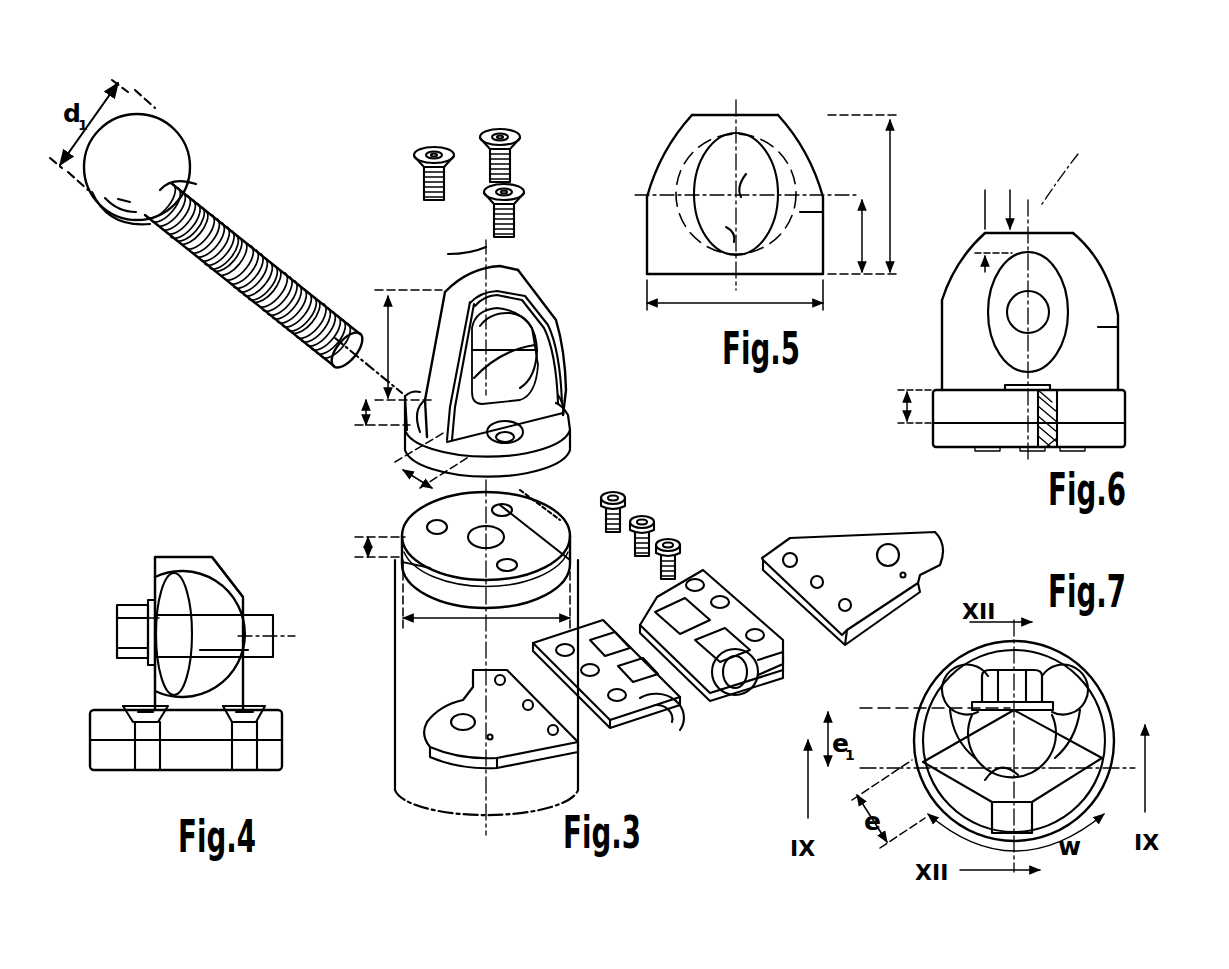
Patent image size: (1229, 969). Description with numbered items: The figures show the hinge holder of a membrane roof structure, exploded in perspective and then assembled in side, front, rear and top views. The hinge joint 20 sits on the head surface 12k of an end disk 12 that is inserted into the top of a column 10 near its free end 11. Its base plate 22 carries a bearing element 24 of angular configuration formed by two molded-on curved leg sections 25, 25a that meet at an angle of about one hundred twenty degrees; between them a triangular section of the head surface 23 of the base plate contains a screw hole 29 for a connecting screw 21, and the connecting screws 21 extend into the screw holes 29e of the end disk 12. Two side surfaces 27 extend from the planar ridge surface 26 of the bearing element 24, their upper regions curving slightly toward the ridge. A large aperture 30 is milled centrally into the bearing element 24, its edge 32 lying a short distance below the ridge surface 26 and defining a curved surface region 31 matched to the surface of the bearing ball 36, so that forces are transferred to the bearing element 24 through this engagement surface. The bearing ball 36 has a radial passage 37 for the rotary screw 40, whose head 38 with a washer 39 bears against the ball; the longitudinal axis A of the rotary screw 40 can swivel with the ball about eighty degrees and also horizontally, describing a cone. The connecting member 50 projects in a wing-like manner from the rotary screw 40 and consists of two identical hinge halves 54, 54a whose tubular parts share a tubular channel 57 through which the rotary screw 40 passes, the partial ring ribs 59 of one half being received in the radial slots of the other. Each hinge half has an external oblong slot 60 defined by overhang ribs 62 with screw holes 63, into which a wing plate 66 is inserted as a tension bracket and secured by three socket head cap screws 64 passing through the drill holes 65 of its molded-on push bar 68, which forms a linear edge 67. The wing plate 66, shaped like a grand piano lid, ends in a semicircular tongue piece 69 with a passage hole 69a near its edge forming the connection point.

In FIG. 3, the column 10 is at (426, 758).
In FIG. 3, the free end 11 is at (400, 565).
In FIG. 3, the end disk 12 is at (496, 542).
In FIG. 4, the end disk 12 is at (216, 739).
In FIG. 6, the end disk 12 is at (1011, 424).
In FIG. 3, the head surface 12k is at (535, 525).
In FIG. 4, the head surface 12k is at (111, 744).
In FIG. 6, the head surface 12k is at (1086, 422).
In FIG. 3, the hinge joint 20 is at (491, 356).
In FIG. 4, the hinge joint 20 is at (199, 580).
In FIG. 5, the hinge joint 20 is at (740, 191).
In FIG. 6, the hinge joint 20 is at (1014, 294).
In FIG. 7, the hinge joint 20 is at (1018, 746).
In FIG. 3, the connecting screw 21 is at (480, 210).
In FIG. 4, the connecting screw 21 is at (255, 737).
In FIG. 6, the connecting screw 21 is at (1036, 453).
In FIG. 7, the connecting screw 21 is at (1070, 697).
In FIG. 3, the base plate 22 is at (560, 432).
In FIG. 4, the base plate 22 is at (268, 714).
In FIG. 6, the base plate 22 is at (956, 412).
In FIG. 3, the head surface 23 is at (418, 394).
In FIG. 3, the bearing element 24 is at (442, 300).
In FIG. 4, the bearing element 24 is at (233, 587).
In FIG. 5, the bearing element 24 is at (671, 137).
In FIG. 6, the bearing element 24 is at (946, 324).
In FIG. 7, the bearing element 24 is at (926, 750).
In FIG. 3, the leg section 25 is at (440, 405).
In FIG. 7, the leg section 25 is at (946, 727).
In FIG. 3, the leg section 25a is at (540, 407).
In FIG. 7, the leg section 25a is at (1085, 755).
In FIG. 3, the ridge surface 26 is at (512, 288).
In FIG. 4, the ridge surface 26 is at (199, 552).
In FIG. 5, the ridge surface 26 is at (775, 112).
In FIG. 6, the ridge surface 26 is at (1009, 228).
In FIG. 7, the ridge surface 26 is at (1012, 746).
In FIG. 3, the side surface 27 is at (578, 264).
In FIG. 4, the side surface 27 is at (174, 560).
In FIG. 5, the side surface 27 is at (812, 172).
In FIG. 6, the side surface 27 is at (951, 289).
In FIG. 7, the side surface 27 is at (1012, 780).
In FIG. 3, the screw hole 29 is at (520, 430).
In FIG. 3, the screw hole 29e is at (432, 522).
In FIG. 3, the aperture 30 is at (535, 346).
In FIG. 5, the aperture 30 is at (710, 177).
In FIG. 6, the aperture 30 is at (1036, 280).
In FIG. 3, the surface region 31 is at (535, 366).
In FIG. 3, the edge 32 is at (545, 340).
In FIG. 5, the edge 32 is at (700, 187).
In FIG. 6, the edge 32 is at (1070, 302).
In FIG. 3, the bearing ball 36 is at (160, 157).
In FIG. 4, the bearing ball 36 is at (200, 634).
In FIG. 7, the bearing ball 36 is at (1008, 800).
In FIG. 3, the radial passage 37 is at (178, 170).
In FIG. 4, the head 38 is at (126, 605).
In FIG. 7, the head 38 is at (1040, 682).
In FIG. 4, the washer 39 is at (150, 667).
In FIG. 7, the washer 39 is at (979, 706).
In FIG. 3, the rotary screw 40 is at (260, 240).
In FIG. 4, the rotary screw 40 is at (266, 614).
In FIG. 3, the connecting member 50 is at (689, 646).
In FIG. 3, the hinge half 54 is at (756, 712).
In FIG. 3, the hinge half 54a is at (663, 742).
In FIG. 3, the tubular channel 57 is at (726, 687).
In FIG. 3, the partial ring rib 59 is at (619, 642).
In FIG. 3, the oblong slot 60 is at (636, 737).
In FIG. 3, the overhang rib 62 is at (770, 657).
In FIG. 3, the screw hole 63 is at (726, 632).
In FIG. 3, the socket head cap screw 64 is at (671, 542).
In FIG. 3, the drill hole 65 is at (848, 612).
In FIG. 3, the wing plate 66 is at (706, 632).
In FIG. 3, the linear edge 67 is at (831, 617).
In FIG. 3, the push bar 68 is at (766, 557).
In FIG. 3, the tongue piece 69 is at (450, 752).
In FIG. 3, the passage hole 69a is at (890, 550).
In FIG. 3, the longitudinal axis A is at (392, 385).
In FIG. 4, the longitudinal axis A is at (283, 642).